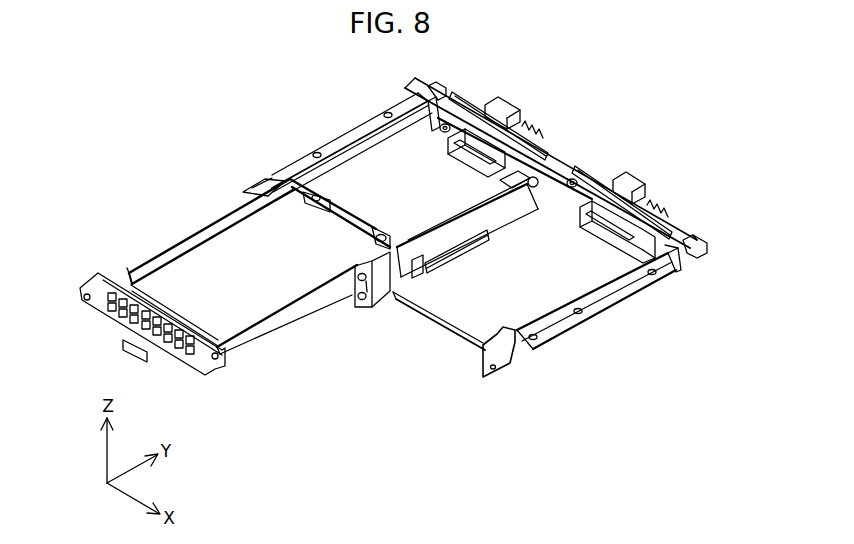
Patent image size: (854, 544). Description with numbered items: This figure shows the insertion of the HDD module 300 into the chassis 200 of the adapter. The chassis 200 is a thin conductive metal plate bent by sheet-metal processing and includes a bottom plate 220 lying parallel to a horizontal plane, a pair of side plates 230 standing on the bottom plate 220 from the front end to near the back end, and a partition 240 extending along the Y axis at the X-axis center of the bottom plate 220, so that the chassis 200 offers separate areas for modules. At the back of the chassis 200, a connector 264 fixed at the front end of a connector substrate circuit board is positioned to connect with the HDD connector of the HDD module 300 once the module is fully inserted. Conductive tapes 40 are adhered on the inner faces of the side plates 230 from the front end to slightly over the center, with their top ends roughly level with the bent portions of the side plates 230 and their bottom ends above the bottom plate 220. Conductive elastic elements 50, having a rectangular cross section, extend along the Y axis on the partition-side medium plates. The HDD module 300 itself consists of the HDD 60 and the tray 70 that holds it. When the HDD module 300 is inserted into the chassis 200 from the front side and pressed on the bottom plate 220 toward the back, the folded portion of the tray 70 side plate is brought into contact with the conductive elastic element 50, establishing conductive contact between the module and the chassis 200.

The chassis 200 is at (486, 224).
The bottom plate 220 is at (417, 145).
The side plates 230 is at (381, 145).
The partition 240 is at (530, 237).
The connector 264 is at (490, 148).
The conductive elastic element 50 is at (437, 271).
The conductive tape 40 is at (331, 156).
The HDD module 300 is at (231, 276).
The tray 70 is at (192, 209).
The HDD 60 is at (178, 270).